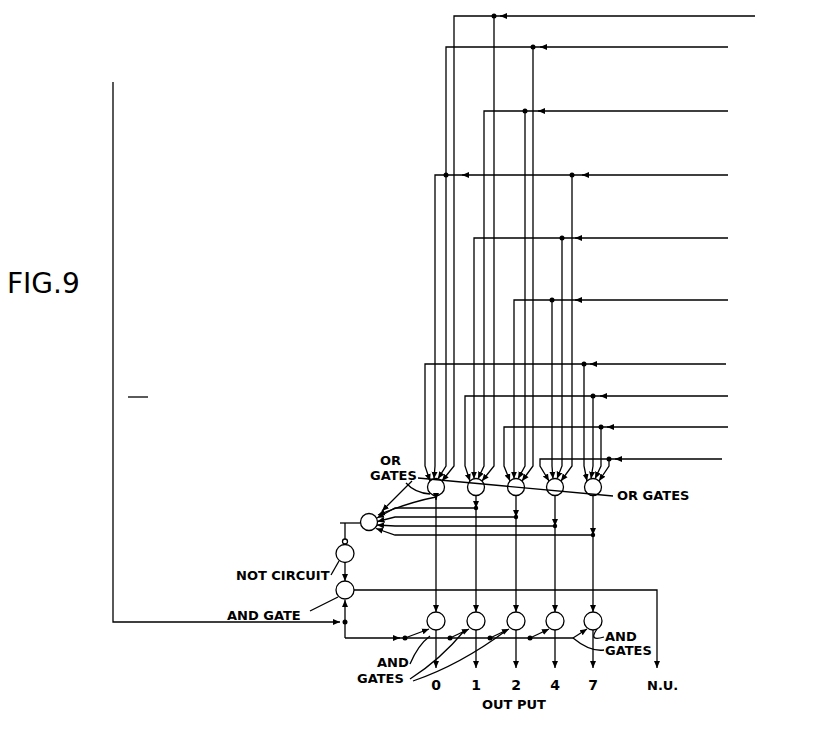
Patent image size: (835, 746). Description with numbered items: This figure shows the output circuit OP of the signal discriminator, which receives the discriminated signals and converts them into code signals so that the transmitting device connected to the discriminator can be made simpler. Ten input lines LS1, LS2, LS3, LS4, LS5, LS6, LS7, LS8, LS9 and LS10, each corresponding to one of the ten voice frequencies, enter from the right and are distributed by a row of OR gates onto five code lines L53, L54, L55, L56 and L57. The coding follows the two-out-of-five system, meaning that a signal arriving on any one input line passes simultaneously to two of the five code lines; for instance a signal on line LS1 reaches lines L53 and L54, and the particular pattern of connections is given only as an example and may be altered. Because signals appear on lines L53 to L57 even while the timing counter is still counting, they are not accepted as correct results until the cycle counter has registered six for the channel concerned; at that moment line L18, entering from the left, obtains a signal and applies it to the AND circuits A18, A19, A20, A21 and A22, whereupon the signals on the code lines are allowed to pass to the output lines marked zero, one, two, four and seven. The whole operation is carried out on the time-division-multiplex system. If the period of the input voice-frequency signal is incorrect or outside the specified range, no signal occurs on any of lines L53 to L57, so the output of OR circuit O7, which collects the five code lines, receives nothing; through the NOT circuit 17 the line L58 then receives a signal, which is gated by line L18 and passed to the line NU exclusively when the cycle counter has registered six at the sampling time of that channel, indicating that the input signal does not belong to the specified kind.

The signal line LS1 is at (598, 241).
The signal line LS2 is at (586, 256).
The signal line LS3 is at (606, 287).
The signal line LS4 is at (584, 320).
The signal line LS5 is at (604, 351).
The signal line LS6 is at (624, 382).
The signal line LS7 is at (524, 440).
The signal line LS8 is at (600, 431).
The signal line LS9 is at (619, 446).
The signal line LS10 is at (643, 462).
The OR circuit O7 is at (477, 511).
The NOT circuit 17 is at (336, 543).
The line L58 is at (357, 580).
The code line L53 is at (451, 553).
The code line L54 is at (490, 554).
The code line L55 is at (530, 554).
The code line L56 is at (569, 554).
The code line L57 is at (608, 554).
The line L18 is at (226, 351).
The output circuit OP is at (139, 386).
The AND circuit A18 is at (437, 633).
The AND circuit A19 is at (479, 633).
The AND circuit A20 is at (520, 633).
The AND circuit A21 is at (560, 633).
The AND circuit A22 is at (600, 633).